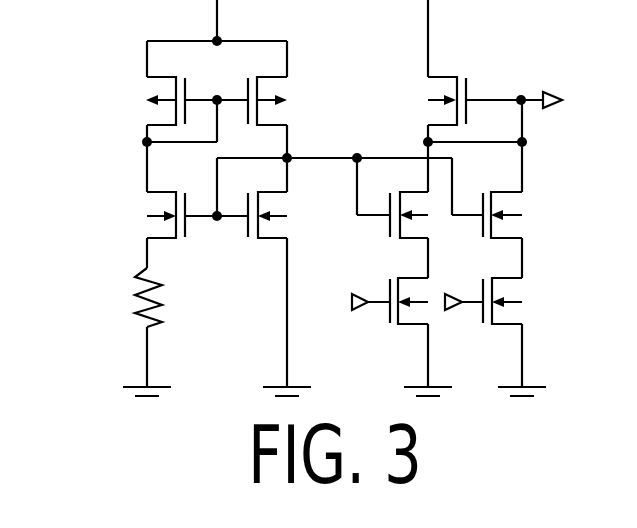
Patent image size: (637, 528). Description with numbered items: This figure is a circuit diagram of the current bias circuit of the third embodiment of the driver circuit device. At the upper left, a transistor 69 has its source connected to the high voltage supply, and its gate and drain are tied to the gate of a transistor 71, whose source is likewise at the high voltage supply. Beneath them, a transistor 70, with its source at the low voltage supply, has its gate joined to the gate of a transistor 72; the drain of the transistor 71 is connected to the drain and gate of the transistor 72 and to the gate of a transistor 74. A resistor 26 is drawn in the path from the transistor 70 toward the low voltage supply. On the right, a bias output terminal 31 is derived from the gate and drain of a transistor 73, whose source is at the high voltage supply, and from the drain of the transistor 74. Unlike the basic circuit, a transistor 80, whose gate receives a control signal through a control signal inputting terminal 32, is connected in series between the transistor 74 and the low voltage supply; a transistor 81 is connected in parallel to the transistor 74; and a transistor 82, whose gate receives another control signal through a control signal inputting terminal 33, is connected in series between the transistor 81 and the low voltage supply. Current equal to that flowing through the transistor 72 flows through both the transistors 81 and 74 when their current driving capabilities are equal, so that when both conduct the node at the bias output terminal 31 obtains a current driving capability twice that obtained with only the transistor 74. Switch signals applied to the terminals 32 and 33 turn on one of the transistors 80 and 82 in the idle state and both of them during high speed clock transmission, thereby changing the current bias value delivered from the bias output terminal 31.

The resistor 26 is at (140, 305).
The bias output terminal 31 is at (549, 90).
The control signal inputting terminal 32 is at (450, 310).
The control signal inputting terminal 33 is at (356, 312).
The transistor 69 is at (142, 97).
The transistor 70 is at (145, 212).
The transistor 71 is at (325, 78).
The transistor 72 is at (325, 197).
The transistor 73 is at (422, 100).
The transistor 74 is at (520, 203).
The transistor 80 is at (523, 292).
The transistor 81 is at (420, 225).
The transistor 82 is at (418, 278).